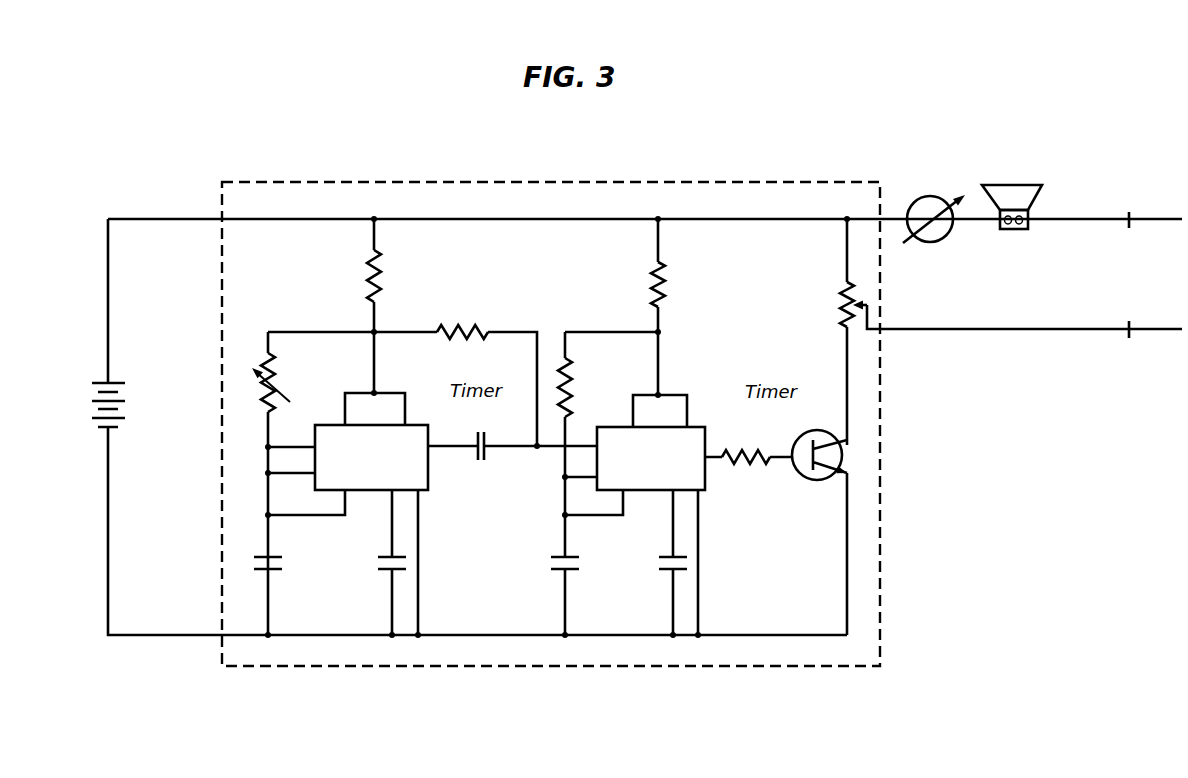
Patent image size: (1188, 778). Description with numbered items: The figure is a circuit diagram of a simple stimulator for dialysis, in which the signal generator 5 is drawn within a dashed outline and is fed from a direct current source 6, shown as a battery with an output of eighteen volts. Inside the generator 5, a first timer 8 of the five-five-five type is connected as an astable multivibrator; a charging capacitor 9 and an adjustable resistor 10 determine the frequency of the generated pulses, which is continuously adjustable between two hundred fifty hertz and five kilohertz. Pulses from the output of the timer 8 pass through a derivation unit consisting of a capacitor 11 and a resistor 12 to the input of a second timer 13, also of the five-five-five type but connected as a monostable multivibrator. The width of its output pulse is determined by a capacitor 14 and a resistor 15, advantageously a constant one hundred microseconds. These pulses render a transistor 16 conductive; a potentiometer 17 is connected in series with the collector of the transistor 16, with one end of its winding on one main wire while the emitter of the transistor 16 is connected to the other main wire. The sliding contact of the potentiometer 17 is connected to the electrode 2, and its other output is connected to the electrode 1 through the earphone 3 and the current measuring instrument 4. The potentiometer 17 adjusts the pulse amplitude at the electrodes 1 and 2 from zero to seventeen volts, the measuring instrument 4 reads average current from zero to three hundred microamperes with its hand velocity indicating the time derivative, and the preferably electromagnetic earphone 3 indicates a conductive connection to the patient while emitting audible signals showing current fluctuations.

The electrode 1 is at (1145, 218).
The electrode 2 is at (1143, 327).
The earphone 3 is at (1019, 231).
The measuring instrument 4 is at (925, 196).
The signal generator 5 is at (437, 183).
The direct current source 6 is at (118, 422).
The first timer 8 is at (413, 427).
The charging capacitor 9 is at (284, 561).
The adjustable resistor 10 is at (277, 375).
The capacitor 11 is at (487, 455).
The resistor 12 is at (443, 326).
The second timer 13 is at (699, 427).
The capacitor 14 is at (581, 561).
The resistor 15 is at (573, 382).
The transistor 16 is at (825, 480).
The potentiometer 17 is at (843, 317).